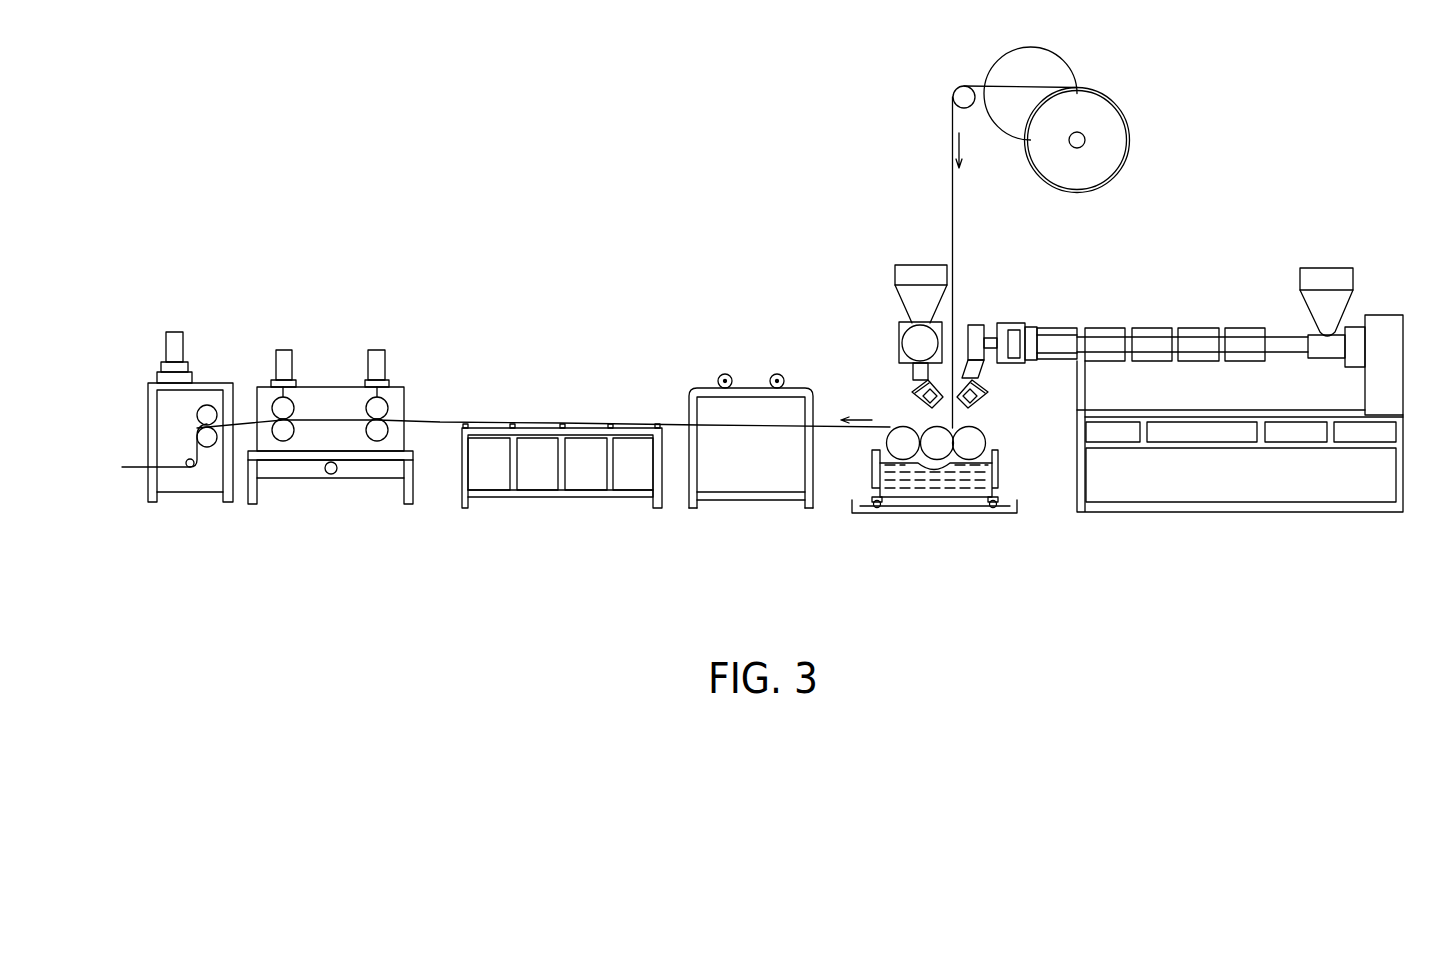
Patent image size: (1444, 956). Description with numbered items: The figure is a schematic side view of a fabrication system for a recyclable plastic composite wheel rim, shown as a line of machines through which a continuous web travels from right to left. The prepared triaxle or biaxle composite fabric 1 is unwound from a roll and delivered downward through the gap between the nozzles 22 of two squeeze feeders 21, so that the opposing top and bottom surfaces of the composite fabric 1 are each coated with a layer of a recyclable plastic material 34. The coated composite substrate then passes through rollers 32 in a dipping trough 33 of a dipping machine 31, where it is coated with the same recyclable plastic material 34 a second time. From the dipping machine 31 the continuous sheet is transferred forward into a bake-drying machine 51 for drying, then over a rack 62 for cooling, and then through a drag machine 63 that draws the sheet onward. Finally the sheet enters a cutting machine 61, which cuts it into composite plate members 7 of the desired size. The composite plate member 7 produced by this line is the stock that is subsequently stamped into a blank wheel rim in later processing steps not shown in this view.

The triaxle or biaxle composite fabric 1 is at (950, 183).
The composite plate member 7 is at (175, 465).
The squeeze feeder 21 is at (920, 323).
The nozzle 22 is at (918, 394).
The dipping machine 31 is at (1000, 475).
The rollers 32 is at (903, 447).
The dipping trough 33 is at (987, 470).
The recyclable plastic material 34 is at (952, 462).
The bake-drying machine 51 is at (790, 388).
The cutting machine 61 is at (203, 383).
The rack 62 is at (583, 428).
The drag machine 63 is at (400, 387).